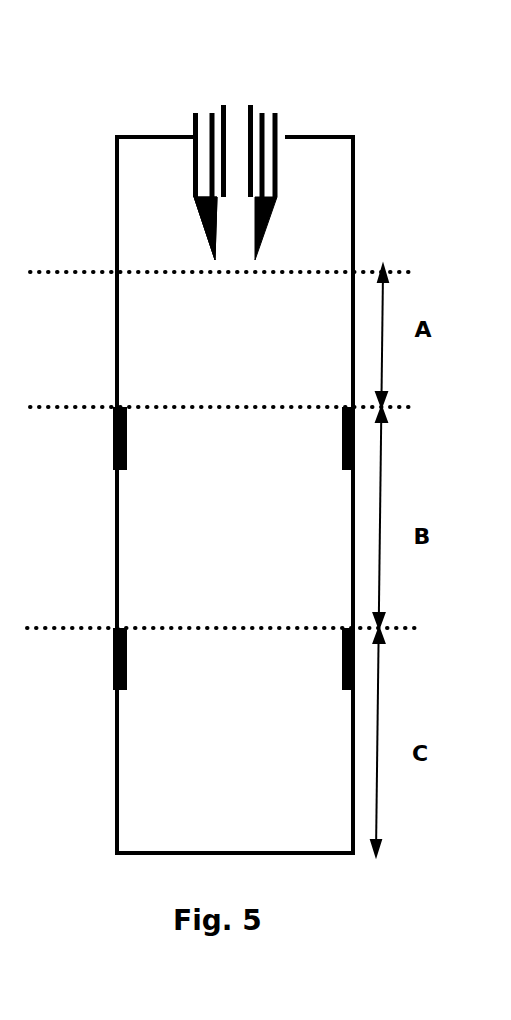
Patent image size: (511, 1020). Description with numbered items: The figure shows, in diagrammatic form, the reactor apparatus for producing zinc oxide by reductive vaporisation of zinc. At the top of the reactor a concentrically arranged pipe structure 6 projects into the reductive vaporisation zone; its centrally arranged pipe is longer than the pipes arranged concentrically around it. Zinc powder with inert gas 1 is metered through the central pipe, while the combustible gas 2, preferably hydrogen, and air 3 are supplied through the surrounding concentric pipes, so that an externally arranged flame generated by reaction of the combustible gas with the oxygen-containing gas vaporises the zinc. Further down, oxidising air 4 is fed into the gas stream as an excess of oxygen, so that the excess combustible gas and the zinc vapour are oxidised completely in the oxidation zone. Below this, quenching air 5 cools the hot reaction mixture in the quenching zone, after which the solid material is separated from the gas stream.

The zinc powder and inert gas 1 is at (240, 127).
The combustible gas 2 is at (265, 117).
The air 3 is at (203, 127).
The oxidising air 4 is at (112, 440).
The quenching air 5 is at (112, 658).
The concentrically arranged pipe structure 6 is at (198, 232).